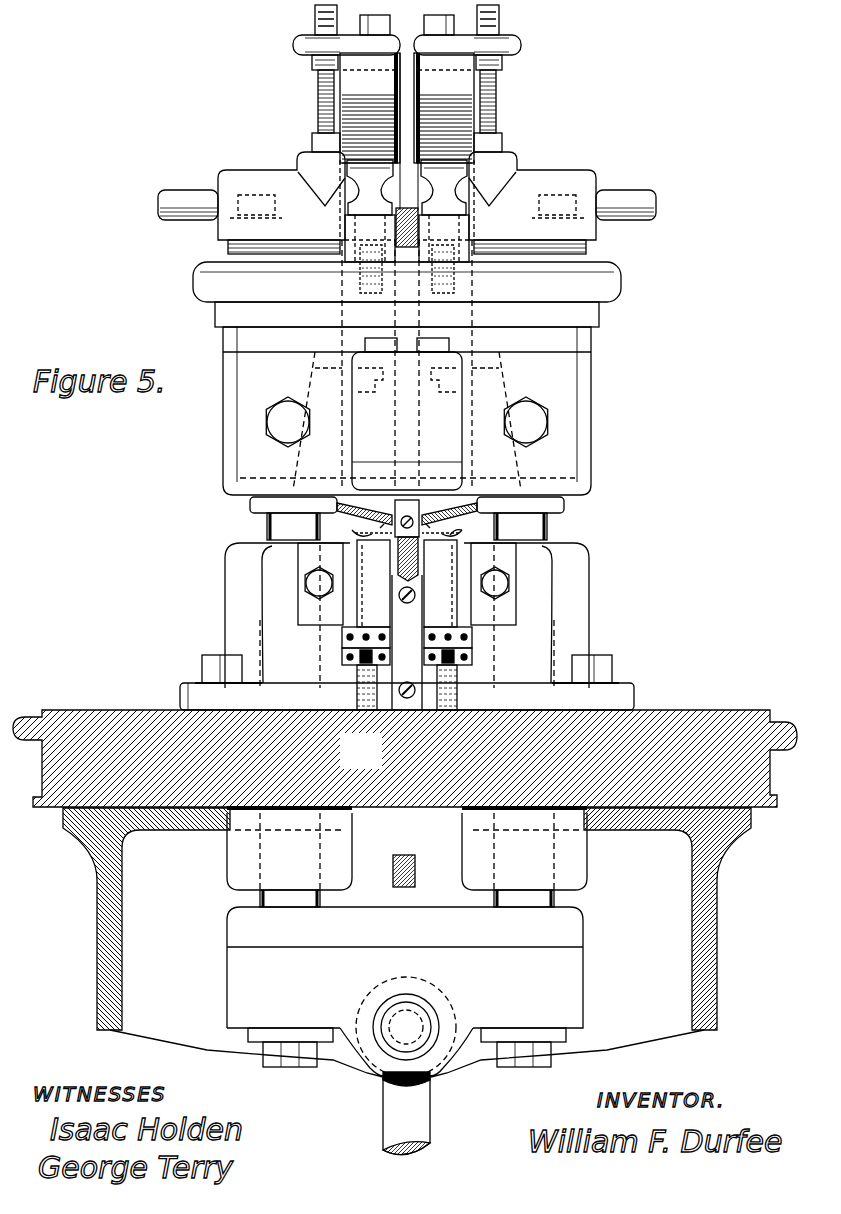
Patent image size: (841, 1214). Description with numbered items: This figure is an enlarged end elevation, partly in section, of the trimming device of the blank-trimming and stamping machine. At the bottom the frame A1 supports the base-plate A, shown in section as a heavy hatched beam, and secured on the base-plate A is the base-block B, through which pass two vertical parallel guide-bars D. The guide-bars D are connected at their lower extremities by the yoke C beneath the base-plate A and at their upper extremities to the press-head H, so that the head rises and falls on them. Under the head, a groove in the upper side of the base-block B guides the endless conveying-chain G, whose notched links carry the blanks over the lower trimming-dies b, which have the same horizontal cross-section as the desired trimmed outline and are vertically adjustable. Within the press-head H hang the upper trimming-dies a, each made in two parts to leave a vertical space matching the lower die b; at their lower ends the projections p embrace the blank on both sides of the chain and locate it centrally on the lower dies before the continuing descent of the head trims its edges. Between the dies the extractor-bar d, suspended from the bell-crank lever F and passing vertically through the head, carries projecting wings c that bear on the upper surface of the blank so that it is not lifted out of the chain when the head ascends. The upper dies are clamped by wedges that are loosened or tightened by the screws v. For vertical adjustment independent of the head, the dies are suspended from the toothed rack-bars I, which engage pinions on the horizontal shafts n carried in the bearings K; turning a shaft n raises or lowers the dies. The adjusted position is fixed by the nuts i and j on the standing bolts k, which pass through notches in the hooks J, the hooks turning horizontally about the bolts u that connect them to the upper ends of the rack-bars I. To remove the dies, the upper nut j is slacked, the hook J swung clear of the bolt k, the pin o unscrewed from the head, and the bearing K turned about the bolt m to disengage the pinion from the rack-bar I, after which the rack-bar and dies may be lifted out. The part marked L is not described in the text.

The upper nut j is at (312, 15).
The hook J is at (292, 42).
The nut i is at (312, 66).
The standing bolt k is at (318, 103).
The bolt u is at (409, 17).
The rack-bar I is at (393, 108).
The bell-crank lever F is at (407, 150).
The bearing K is at (373, 203).
The bolt m is at (248, 188).
The horizontal shaft n is at (158, 205).
The pin o is at (398, 226).
The press-head H is at (407, 294).
The screw v is at (407, 367).
The guide-bar D is at (250, 506).
The base-block B is at (550, 630).
The conveying-chain G is at (398, 560).
The extractor-bar d is at (407, 516).
The upper trimming-die a is at (389, 510).
The lower trimming-die b is at (392, 552).
The projecting wing c is at (460, 525).
The projection p is at (407, 531).
The base-plate A is at (405, 741).
The frame A1 is at (223, 942).
The yoke C is at (405, 987).
The shaft L is at (406, 1066).